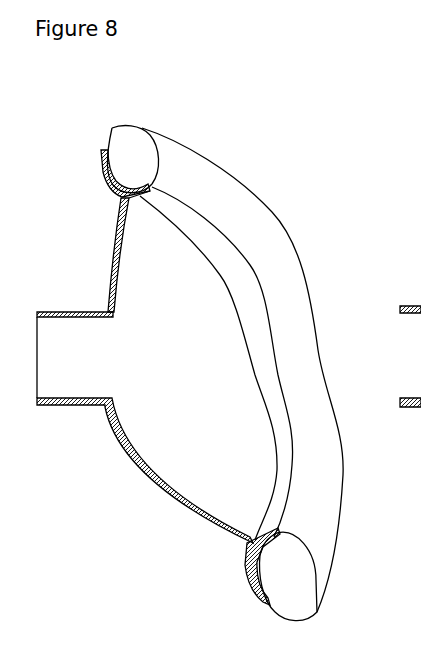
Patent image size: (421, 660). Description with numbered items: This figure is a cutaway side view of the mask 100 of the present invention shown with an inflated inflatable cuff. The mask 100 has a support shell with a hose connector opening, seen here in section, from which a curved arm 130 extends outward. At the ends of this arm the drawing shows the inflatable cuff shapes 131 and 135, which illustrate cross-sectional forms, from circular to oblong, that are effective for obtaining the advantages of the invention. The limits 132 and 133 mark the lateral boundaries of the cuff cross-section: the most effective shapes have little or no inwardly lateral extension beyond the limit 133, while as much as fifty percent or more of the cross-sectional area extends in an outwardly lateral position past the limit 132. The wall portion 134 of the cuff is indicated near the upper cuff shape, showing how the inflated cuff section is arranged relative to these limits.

The mask 100 is at (150, 500).
The curved arm 130 is at (233, 203).
The inflatable cuff shape 131 is at (127, 167).
The limit 132 is at (110, 152).
The limit 133 is at (160, 178).
The outer wall 134 is at (121, 135).
The inflatable cuff shape 135 is at (300, 588).